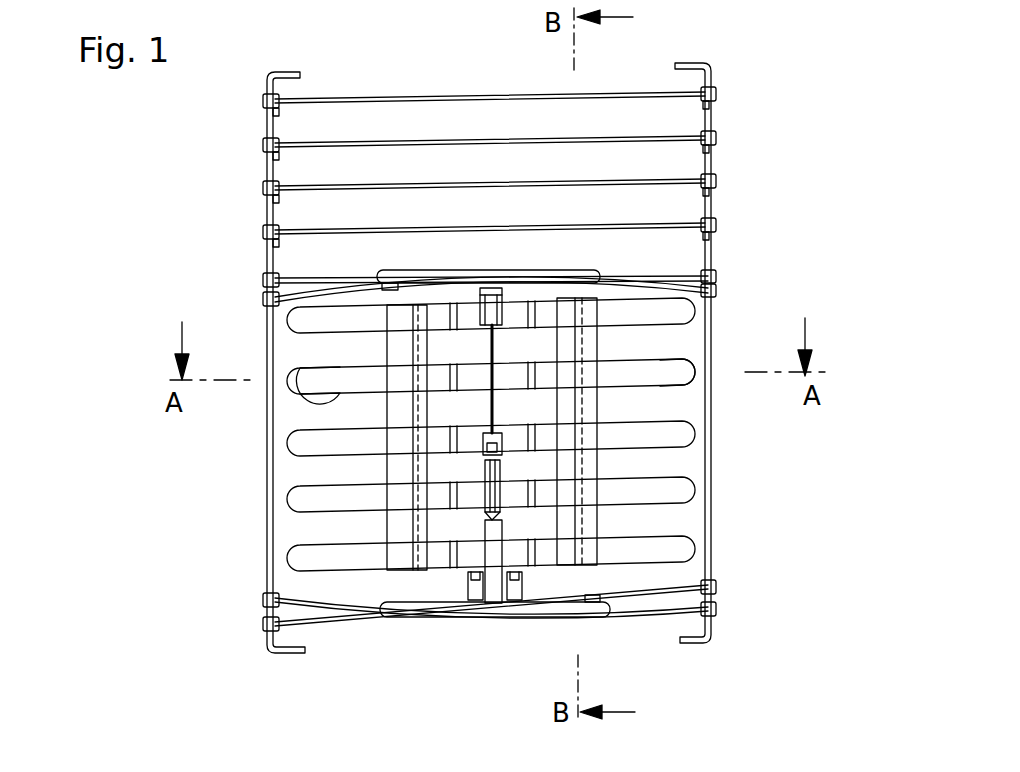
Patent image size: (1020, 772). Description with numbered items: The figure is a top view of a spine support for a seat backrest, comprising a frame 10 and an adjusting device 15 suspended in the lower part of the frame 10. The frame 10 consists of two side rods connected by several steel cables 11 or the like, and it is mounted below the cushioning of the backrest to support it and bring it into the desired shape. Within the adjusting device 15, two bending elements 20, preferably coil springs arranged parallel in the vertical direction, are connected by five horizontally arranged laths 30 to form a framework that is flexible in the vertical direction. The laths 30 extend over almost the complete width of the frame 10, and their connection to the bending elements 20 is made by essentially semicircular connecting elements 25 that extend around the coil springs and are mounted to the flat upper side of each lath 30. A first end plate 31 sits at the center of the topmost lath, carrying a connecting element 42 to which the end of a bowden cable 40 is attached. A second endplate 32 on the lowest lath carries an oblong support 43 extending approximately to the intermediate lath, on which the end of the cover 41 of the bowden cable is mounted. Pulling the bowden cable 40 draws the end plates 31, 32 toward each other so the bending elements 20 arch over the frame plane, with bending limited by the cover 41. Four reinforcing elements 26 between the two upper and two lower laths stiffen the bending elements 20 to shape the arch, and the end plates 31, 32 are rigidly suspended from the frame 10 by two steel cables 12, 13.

The frame 10 is at (712, 96).
The steel cables 11 is at (387, 142).
The steel cable 12 is at (285, 272).
The steel cable 13 is at (368, 612).
The adjusting device 15 is at (358, 469).
The bending elements 20 is at (403, 462).
The connecting elements 25 is at (593, 492).
The reinforcing elements 26 is at (395, 345).
The laths 30 is at (675, 371).
The first end plate 31 is at (445, 300).
The second endplate 32 is at (455, 580).
The bowden cable 40 is at (397, 376).
The cover of the bowden cable 41 is at (487, 510).
The connecting element 42 is at (505, 300).
The oblong support 43 is at (500, 528).